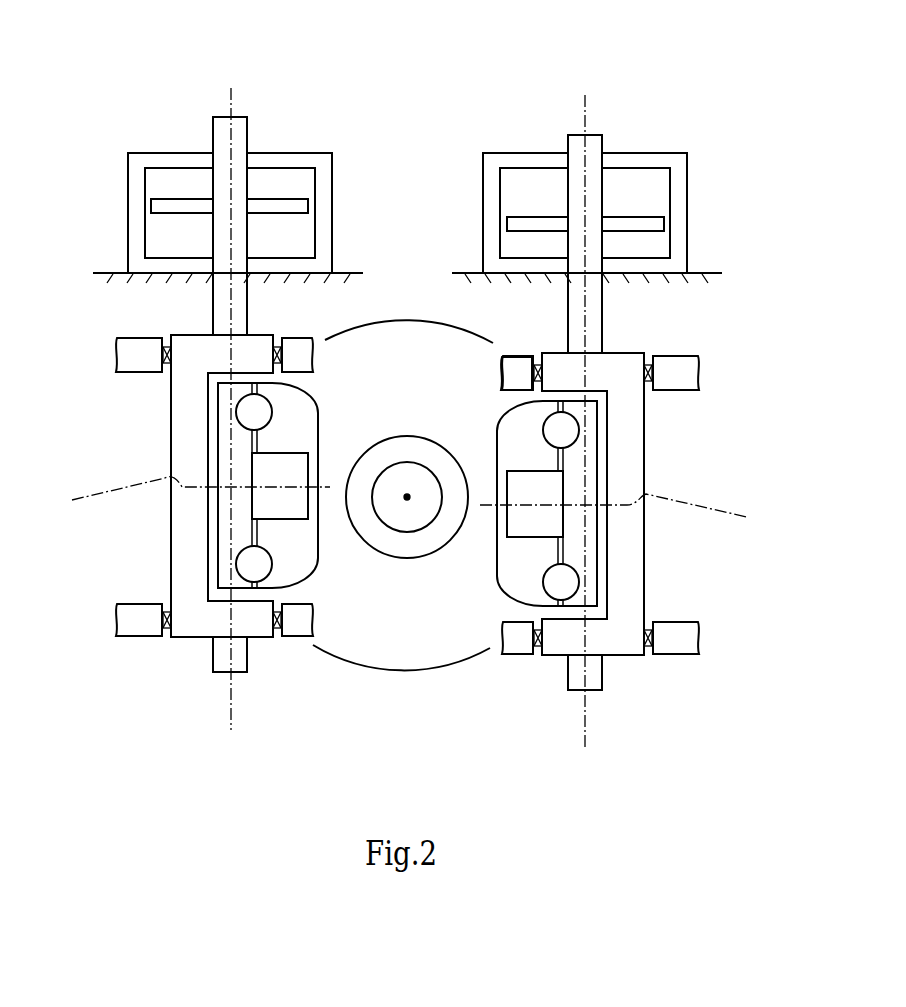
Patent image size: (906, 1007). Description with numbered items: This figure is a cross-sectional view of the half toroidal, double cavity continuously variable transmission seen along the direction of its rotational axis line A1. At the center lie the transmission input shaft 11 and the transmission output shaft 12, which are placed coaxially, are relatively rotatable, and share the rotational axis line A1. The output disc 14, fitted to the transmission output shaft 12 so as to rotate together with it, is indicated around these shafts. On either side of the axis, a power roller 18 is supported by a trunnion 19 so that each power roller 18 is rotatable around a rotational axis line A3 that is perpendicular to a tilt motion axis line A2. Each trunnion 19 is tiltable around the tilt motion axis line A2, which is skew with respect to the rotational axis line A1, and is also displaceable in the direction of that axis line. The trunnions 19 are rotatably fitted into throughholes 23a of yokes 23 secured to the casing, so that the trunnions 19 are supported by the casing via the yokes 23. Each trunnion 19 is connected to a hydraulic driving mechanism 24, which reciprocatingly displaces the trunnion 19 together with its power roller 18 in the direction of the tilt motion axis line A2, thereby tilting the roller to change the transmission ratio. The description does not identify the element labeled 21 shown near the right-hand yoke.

The transmission input shaft 11 is at (378, 440).
The transmission output shaft 12 is at (423, 462).
The output disc 14 is at (418, 335).
The power roller 18 is at (307, 552).
The trunnion 19 is at (169, 506).
The support arm 21 is at (519, 349).
The yoke 23 is at (128, 636).
The throughhole 23a is at (163, 640).
The hydraulic driving mechanism 24 is at (313, 136).
The rotational axis line A1 is at (405, 505).
The tilt motion axis line A2 is at (227, 708).
The rotational axis line A3 is at (408, 502).